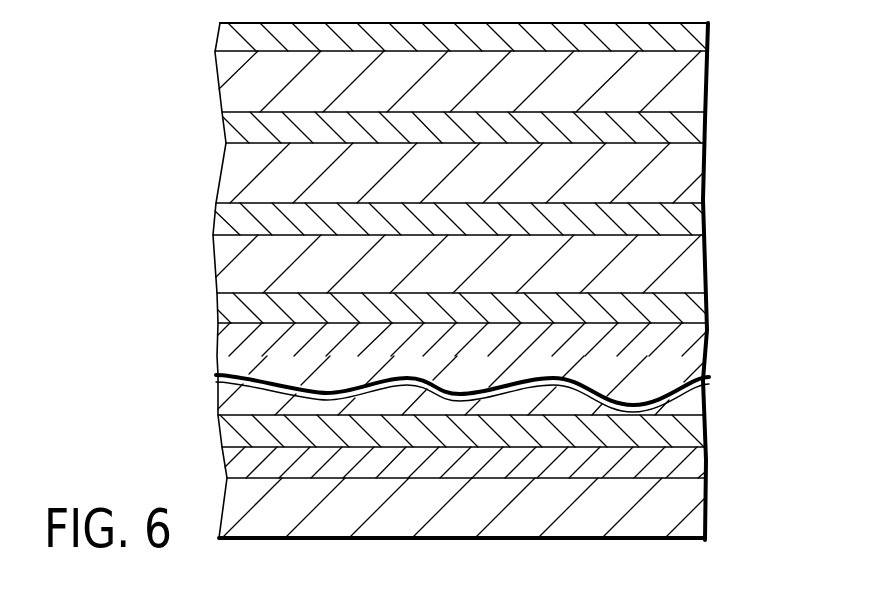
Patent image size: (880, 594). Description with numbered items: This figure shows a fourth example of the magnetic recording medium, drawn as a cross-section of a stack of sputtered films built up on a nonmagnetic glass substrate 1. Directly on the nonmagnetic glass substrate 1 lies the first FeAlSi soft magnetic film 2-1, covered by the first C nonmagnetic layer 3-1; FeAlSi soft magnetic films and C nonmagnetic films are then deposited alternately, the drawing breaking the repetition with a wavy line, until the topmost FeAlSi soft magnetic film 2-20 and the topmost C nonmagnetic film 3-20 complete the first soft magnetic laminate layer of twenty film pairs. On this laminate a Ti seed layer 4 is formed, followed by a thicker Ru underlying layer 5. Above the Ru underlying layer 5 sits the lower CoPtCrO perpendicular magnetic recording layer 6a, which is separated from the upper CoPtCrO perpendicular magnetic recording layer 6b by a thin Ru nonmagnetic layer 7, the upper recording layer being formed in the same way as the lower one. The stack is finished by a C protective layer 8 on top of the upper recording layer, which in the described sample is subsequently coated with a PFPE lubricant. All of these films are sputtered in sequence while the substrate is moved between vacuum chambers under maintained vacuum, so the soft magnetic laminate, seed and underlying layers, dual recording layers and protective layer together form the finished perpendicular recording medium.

The C protective layer 8 is at (703, 42).
The upper CoPtCrO perpendicular magnetic recording layer 6b is at (703, 90).
The Ru nonmagnetic layer 7 is at (703, 132).
The lower CoPtCrO perpendicular magnetic recording layer 6a is at (703, 170).
The Ru underlying layer 5 is at (703, 221).
The Ti seed layer 4 is at (703, 272).
The C nonmagnetic film 3-20 is at (703, 316).
The FeAlSi soft magnetic film 2-20 is at (703, 348).
The C nonmagnetic layer 3-1 is at (703, 433).
The FeAlSi soft magnetic film 2-1 is at (703, 466).
The nonmagnetic glass substrate 1 is at (703, 508).